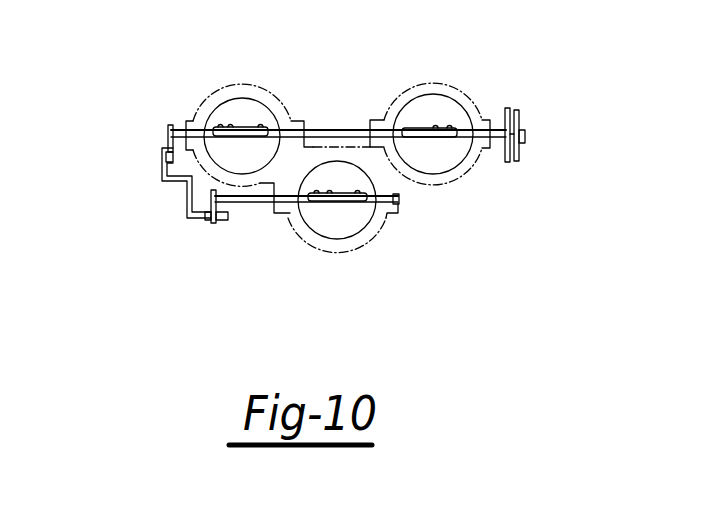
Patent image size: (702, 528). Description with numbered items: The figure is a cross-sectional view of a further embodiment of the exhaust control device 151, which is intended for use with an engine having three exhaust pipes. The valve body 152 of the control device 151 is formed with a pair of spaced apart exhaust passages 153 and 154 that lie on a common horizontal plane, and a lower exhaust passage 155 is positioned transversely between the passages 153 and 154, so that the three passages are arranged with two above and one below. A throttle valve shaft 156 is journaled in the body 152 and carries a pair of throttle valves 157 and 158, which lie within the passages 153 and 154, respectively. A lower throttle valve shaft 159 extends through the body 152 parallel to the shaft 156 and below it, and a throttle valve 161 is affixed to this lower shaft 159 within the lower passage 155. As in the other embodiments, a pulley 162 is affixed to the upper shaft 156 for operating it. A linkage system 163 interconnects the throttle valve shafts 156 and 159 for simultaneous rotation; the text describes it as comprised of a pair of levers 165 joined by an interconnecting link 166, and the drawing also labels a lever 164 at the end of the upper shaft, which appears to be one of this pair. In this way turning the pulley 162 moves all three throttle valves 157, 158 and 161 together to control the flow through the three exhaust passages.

The exhaust control device 151 is at (415, 77).
The valve body 152 is at (284, 110).
The exhaust passage 153 is at (444, 103).
The exhaust passage 154 is at (246, 100).
The lower exhaust passage 155 is at (336, 232).
The throttle valve shaft 156 is at (470, 122).
The throttle valve 157 is at (434, 128).
The throttle valve 158 is at (222, 130).
The lower throttle valve shaft 159 is at (399, 215).
The throttle valve 161 is at (305, 214).
The pulley 162 is at (522, 111).
The linkage system 163 is at (148, 195).
The upper flange plate 164 is at (170, 123).
The lever 165 is at (212, 225).
The interconnecting link 166 is at (168, 185).